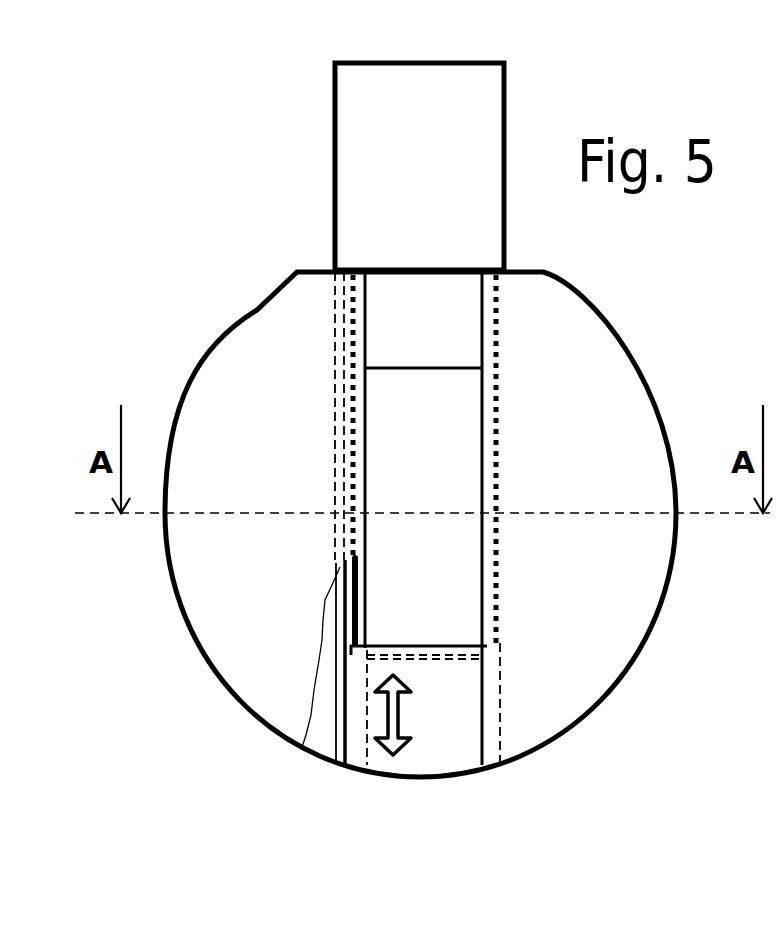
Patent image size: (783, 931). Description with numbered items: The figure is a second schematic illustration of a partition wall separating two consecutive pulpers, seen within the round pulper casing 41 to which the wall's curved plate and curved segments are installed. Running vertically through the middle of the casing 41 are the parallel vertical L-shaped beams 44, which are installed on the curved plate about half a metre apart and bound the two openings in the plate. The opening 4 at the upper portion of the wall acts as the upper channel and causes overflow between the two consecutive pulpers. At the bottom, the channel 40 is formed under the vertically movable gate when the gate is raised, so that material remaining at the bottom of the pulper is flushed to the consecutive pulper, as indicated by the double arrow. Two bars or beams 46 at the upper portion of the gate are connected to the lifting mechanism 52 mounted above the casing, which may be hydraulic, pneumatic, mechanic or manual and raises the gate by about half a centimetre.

The pulper casing 41 is at (258, 312).
The lifting mechanism 52 is at (367, 156).
The opening 4 is at (422, 333).
The channel 40 is at (468, 734).
The bars or beams 46 is at (345, 576).
The vertical L-shaped beams 44 is at (338, 704).